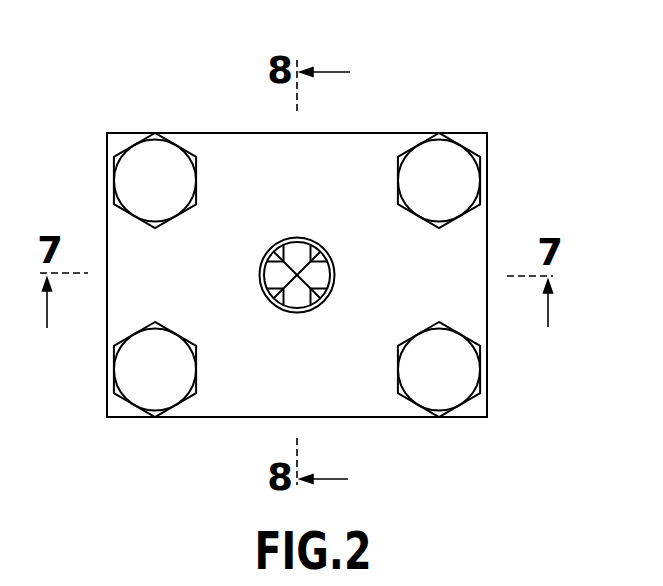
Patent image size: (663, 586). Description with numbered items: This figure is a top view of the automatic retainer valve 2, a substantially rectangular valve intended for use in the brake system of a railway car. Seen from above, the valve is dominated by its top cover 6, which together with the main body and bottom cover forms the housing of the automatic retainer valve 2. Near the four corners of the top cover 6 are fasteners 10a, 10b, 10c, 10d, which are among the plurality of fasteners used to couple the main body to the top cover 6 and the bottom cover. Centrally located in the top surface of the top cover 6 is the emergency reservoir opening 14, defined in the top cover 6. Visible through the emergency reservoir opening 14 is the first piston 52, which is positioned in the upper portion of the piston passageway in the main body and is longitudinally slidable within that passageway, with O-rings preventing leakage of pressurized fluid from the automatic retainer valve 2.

The automatic retainer valve 2 is at (486, 56).
The top cover 6 is at (369, 143).
The fastener 10a is at (145, 160).
The fastener 10b is at (450, 152).
The fastener 10c is at (460, 385).
The fastener 10d is at (129, 381).
The emergency reservoir opening 14 is at (334, 272).
The first piston 52 is at (291, 250).